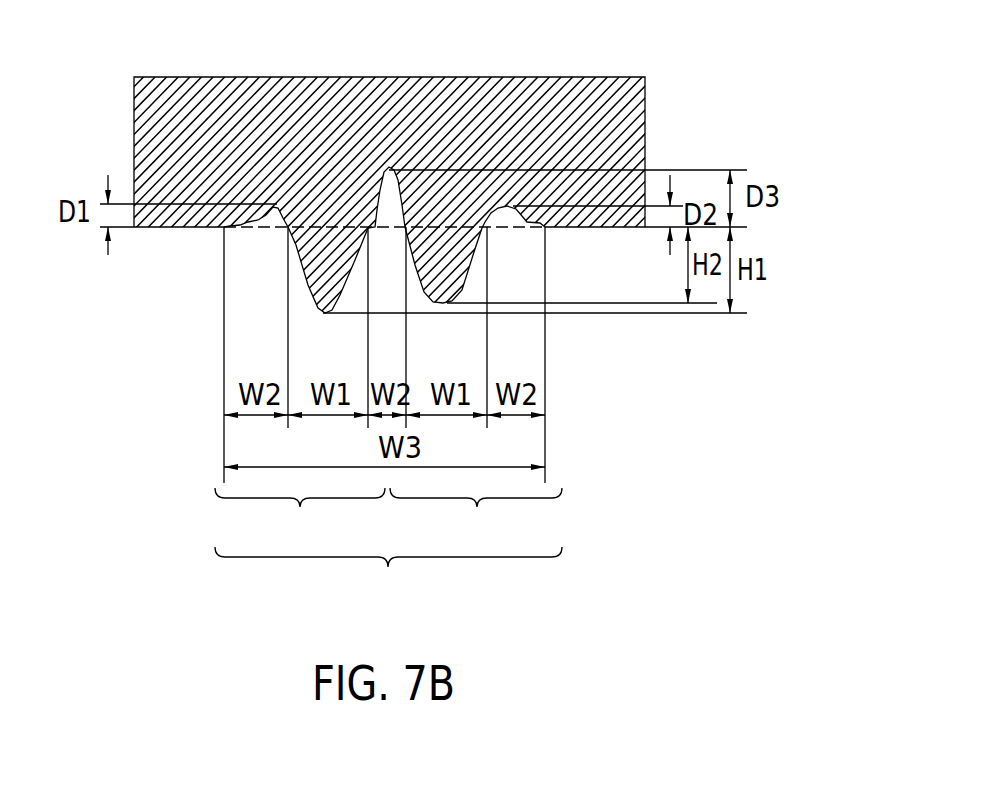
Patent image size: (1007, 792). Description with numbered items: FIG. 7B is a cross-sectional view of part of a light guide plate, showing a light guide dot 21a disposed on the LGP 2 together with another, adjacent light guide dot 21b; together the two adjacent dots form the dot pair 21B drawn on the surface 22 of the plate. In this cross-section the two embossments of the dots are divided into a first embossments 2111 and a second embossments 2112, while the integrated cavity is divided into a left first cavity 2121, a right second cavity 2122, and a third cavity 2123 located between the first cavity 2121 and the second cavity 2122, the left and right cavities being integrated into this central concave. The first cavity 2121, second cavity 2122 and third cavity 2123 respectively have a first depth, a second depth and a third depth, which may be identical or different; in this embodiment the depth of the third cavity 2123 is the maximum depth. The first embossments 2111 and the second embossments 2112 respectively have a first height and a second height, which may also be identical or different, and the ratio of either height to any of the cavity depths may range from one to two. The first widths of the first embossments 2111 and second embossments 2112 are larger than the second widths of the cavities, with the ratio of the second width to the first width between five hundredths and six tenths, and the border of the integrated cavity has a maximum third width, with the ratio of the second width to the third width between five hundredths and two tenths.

The LGP 2 is at (638, 150).
The flat bottom surface 22 is at (593, 230).
The groove structure 21B is at (388, 583).
The light guide dot 21a is at (300, 516).
The light guide dot 21b is at (476, 516).
The first embossments 2111 is at (328, 298).
The second embossments 2112 is at (444, 303).
The first cavity 2121 is at (275, 226).
The second cavity 2122 is at (507, 240).
The third cavity 2123 is at (386, 212).